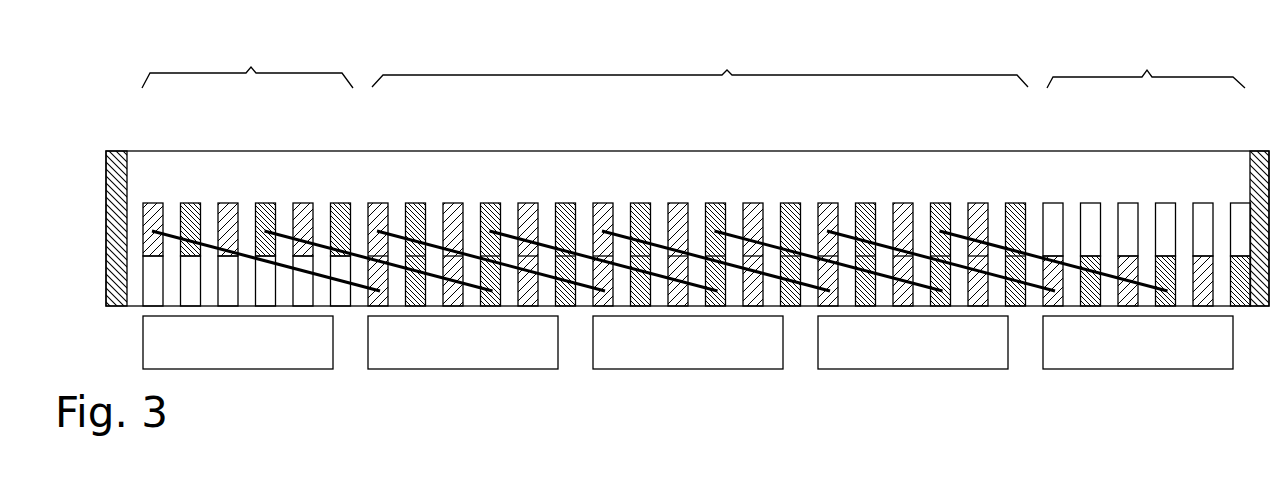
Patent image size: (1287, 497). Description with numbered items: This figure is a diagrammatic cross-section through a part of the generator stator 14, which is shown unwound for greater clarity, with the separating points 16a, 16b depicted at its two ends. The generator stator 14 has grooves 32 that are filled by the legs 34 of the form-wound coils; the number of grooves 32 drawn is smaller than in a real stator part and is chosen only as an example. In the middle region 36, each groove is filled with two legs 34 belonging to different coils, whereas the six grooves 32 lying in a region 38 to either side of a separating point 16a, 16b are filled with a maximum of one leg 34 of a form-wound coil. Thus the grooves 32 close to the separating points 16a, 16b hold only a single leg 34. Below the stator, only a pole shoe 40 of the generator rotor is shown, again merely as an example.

The generator stator 14 is at (1050, 170).
The separating point 16a is at (113, 138).
The separating point 16b is at (1260, 142).
The grooves 32 is at (343, 197).
The legs 34 is at (577, 207).
The middle region 36 is at (700, 63).
The region 38 is at (693, 64).
The pole shoe 40 is at (305, 360).